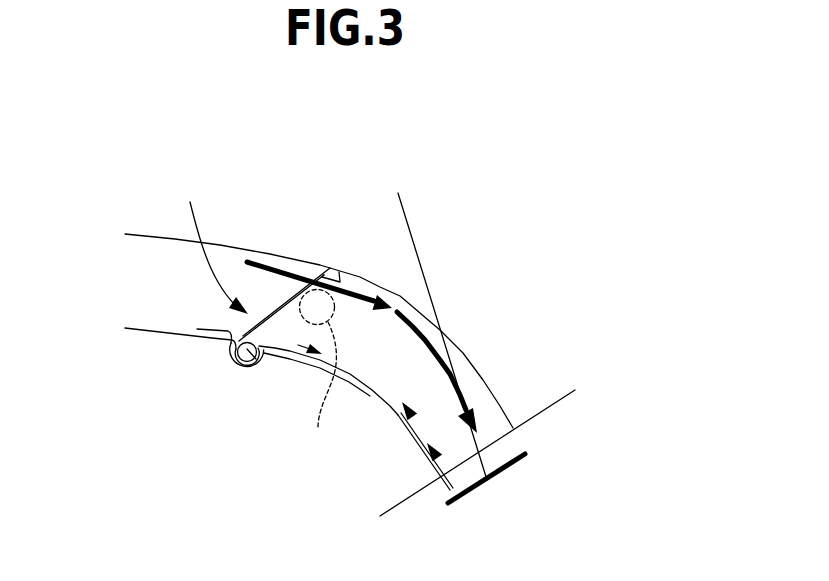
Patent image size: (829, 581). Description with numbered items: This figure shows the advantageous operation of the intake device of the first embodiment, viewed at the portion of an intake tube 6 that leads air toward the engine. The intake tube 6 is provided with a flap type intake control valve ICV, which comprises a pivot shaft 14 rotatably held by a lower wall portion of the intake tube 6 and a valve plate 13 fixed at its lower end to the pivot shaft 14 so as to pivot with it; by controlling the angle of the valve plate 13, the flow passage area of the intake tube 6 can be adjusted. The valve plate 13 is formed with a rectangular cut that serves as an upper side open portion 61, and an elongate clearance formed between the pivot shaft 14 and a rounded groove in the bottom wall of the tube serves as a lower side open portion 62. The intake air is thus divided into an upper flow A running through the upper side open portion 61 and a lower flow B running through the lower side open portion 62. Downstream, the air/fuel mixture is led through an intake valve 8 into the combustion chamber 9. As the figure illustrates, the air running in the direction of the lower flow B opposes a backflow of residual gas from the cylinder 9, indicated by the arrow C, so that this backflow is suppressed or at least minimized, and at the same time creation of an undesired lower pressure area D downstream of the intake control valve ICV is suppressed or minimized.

The intake tube 6 is at (224, 244).
The valve plate 13 is at (281, 304).
The upper side open portion 61 is at (320, 267).
The intake valve 8 is at (423, 269).
The pivot shaft 14 is at (259, 370).
The lower side open portion 62 is at (237, 371).
The combustion chamber 9 is at (506, 520).
The upper flow A is at (345, 282).
The lower flow B is at (206, 340).
The backflow of residual gas C is at (415, 436).
The lower pressure area D is at (318, 374).
The intake control valve ICV is at (210, 247).